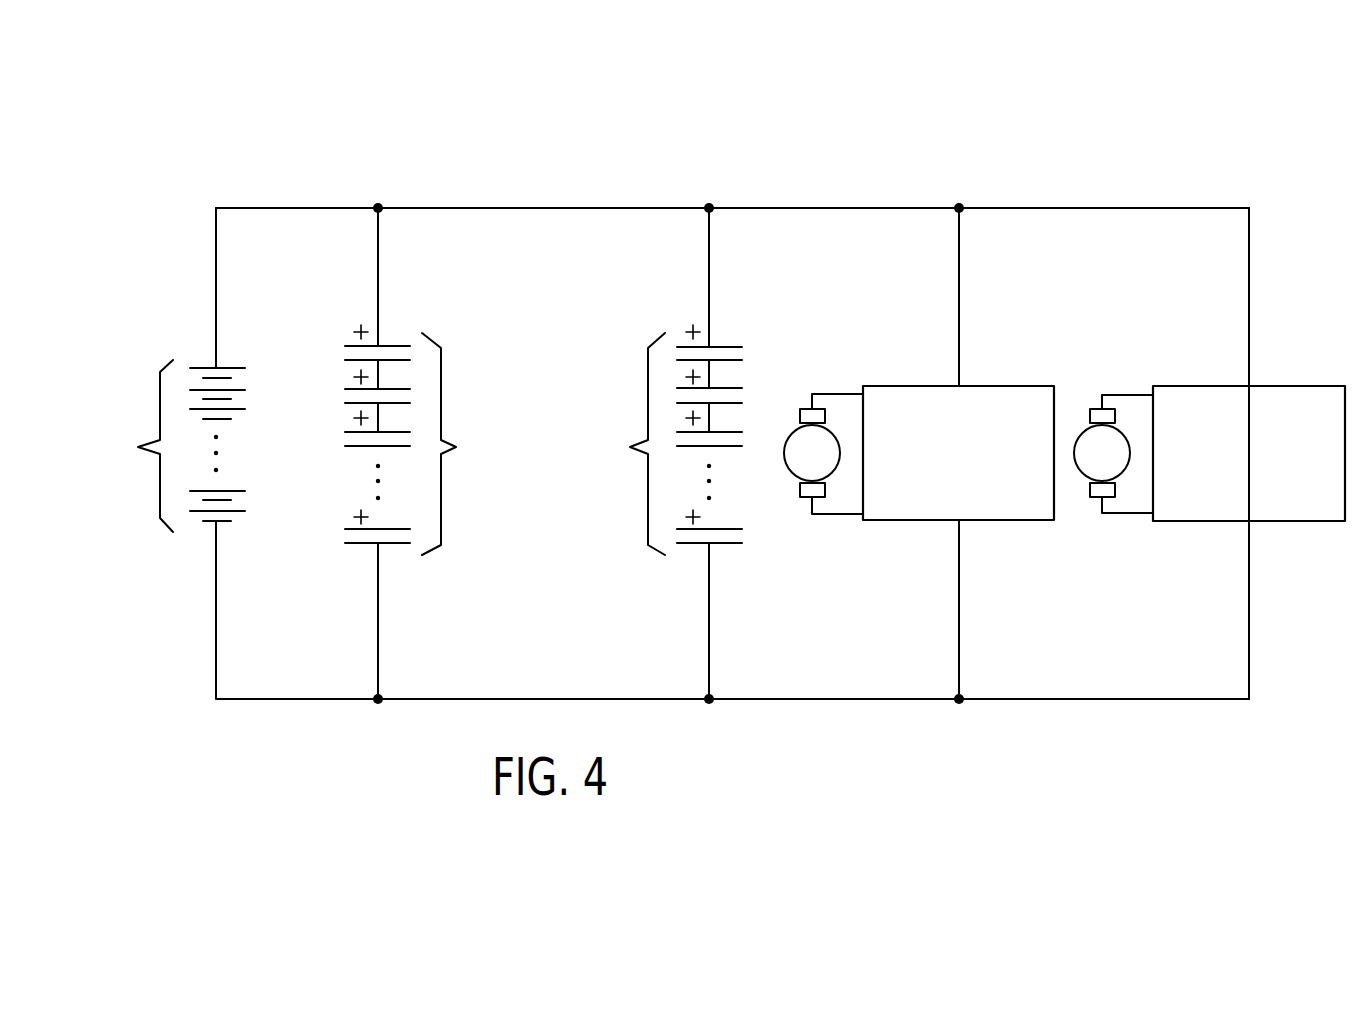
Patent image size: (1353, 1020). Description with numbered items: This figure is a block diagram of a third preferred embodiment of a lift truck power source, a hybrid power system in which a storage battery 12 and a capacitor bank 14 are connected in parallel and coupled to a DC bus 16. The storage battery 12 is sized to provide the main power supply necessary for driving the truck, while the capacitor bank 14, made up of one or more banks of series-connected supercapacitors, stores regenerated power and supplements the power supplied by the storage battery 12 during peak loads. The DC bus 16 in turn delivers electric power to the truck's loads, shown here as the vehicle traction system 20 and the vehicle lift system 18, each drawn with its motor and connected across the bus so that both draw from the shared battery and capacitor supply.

The storage battery 12 is at (210, 522).
The capacitor bank 14 is at (527, 383).
The DC bus 16 is at (820, 207).
The lift system 18 is at (1280, 386).
The vehicle traction system 20 is at (1000, 386).